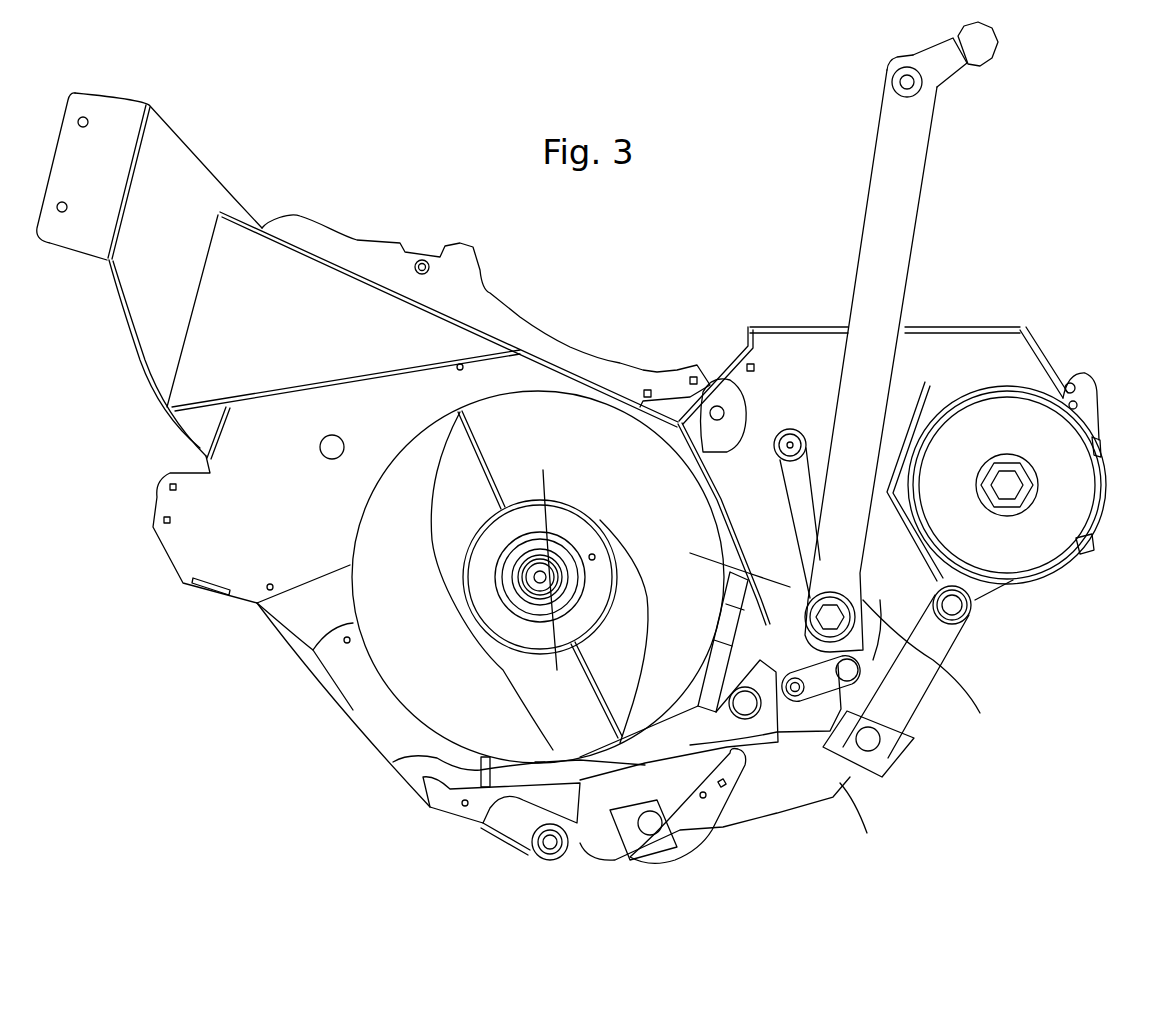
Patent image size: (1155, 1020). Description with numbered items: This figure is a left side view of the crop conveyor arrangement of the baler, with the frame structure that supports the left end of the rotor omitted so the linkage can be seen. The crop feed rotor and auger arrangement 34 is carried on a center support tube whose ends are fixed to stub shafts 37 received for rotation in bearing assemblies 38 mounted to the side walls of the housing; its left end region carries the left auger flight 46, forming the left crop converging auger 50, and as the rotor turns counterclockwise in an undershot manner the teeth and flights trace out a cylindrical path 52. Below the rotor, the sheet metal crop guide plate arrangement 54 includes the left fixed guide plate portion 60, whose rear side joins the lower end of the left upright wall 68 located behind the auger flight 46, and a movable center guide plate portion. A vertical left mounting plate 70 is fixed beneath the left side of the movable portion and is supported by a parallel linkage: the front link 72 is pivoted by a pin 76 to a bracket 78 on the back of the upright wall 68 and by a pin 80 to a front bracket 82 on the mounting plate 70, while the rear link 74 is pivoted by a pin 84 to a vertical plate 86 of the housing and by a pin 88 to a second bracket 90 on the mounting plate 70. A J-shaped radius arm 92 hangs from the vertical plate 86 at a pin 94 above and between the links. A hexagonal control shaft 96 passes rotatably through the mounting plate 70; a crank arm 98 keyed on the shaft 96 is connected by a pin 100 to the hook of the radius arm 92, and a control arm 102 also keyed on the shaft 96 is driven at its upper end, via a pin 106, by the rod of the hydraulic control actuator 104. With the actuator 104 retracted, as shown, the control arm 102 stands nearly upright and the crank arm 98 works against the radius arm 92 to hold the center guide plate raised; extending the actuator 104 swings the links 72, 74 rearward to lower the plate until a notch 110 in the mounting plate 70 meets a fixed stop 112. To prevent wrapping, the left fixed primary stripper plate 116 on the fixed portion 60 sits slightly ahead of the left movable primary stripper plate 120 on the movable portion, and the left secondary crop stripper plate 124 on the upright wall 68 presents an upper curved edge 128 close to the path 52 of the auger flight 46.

The crop feed rotor and auger arrangement 34 is at (380, 715).
The stub shaft 37 is at (553, 508).
The bearing assembly 38 is at (540, 600).
The left auger flight 46 is at (400, 628).
The left crop converging auger 50 is at (336, 546).
The cylindrical path 52 is at (352, 602).
The crop guide plate arrangement 54 is at (545, 760).
The left fixed guide plate portion 60 is at (410, 787).
The left upright wall 68 is at (700, 463).
The left mounting plate 70 is at (800, 803).
The front link 72 is at (723, 827).
The rear link 74 is at (930, 660).
The pin 76 is at (730, 700).
The bracket 78 is at (680, 740).
The pin 80 is at (650, 823).
The front bracket 82 is at (618, 850).
The pin 84 is at (987, 600).
The vertical plate 86 is at (937, 373).
The pin 88 is at (870, 740).
The second bracket 90 is at (832, 798).
The J-shaped radius arm 92 is at (787, 482).
The pin 94 is at (777, 448).
The control shaft 96 is at (817, 593).
The crank arm 98 is at (727, 573).
The pin 100 is at (855, 675).
The control arm 102 is at (873, 177).
The hydraulic control actuator 104 is at (987, 63).
The pin 106 is at (897, 85).
The notch 110 is at (500, 837).
The fixed stop 112 is at (537, 853).
The left fixed primary stripper plate 116 is at (407, 757).
The left movable primary stripper plate 120 is at (507, 757).
The left secondary crop stripper plate 124 is at (725, 607).
The upper curved edge 128 is at (713, 643).